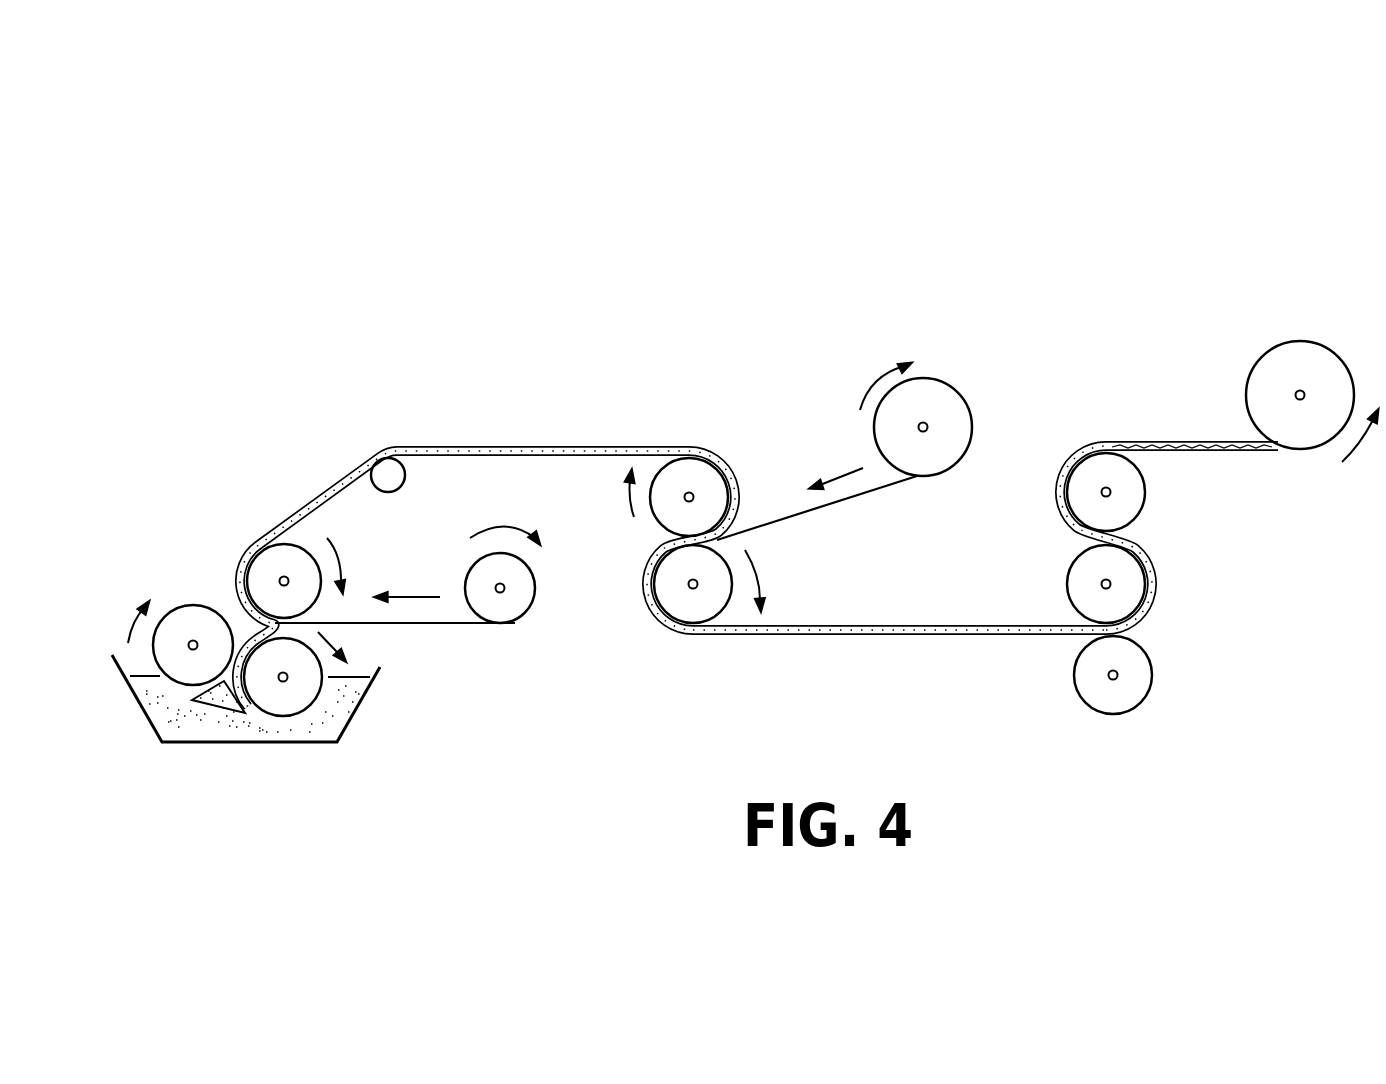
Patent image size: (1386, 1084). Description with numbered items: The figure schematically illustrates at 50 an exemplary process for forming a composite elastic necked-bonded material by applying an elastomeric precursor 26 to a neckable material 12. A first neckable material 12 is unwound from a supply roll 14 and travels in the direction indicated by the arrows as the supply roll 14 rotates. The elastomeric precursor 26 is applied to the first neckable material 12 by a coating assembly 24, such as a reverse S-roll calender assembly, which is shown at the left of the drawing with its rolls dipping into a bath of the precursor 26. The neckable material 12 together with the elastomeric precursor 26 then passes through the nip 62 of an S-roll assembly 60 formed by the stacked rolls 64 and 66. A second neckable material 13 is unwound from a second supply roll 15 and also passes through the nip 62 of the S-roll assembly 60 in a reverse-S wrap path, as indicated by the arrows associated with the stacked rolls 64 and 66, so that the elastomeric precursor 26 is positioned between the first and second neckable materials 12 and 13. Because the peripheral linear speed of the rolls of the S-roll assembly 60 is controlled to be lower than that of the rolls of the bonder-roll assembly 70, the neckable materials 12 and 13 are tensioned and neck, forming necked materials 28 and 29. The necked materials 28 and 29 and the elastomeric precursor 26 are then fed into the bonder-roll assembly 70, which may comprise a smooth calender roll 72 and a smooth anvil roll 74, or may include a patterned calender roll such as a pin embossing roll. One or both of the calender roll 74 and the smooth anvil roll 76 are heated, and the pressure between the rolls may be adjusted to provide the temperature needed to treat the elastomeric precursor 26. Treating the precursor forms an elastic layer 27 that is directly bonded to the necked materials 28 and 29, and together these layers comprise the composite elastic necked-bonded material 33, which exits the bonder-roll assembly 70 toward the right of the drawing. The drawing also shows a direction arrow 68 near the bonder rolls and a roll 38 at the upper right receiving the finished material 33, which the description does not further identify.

The first neckable material 12 is at (332, 493).
The second neckable material 13 is at (890, 488).
The supply roll 14 is at (533, 602).
The second supply roll 15 is at (935, 378).
The coating assembly 24 is at (168, 578).
The elastomeric precursor 26 is at (303, 498).
The elastic layer 27 is at (1180, 440).
The necked material 28 is at (1002, 635).
The necked material 29 is at (947, 623).
The composite elastic necked-bonded material 33 is at (1250, 457).
The take-up roll 38 is at (1295, 341).
The process for forming a composite elastic necked-bonded material 50 is at (712, 325).
The S-roll assembly 60 is at (645, 540).
The nip 62 is at (770, 546).
The stacked roll 64 is at (703, 473).
The stacked roll 66 is at (688, 613).
The direction arrow 68 is at (1048, 602).
The bonder-roll assembly 70 is at (1195, 546).
The smooth calender roll 72 is at (1077, 567).
The smooth anvil roll 74 is at (1152, 688).
The smooth anvil roll 76 is at (1135, 492).